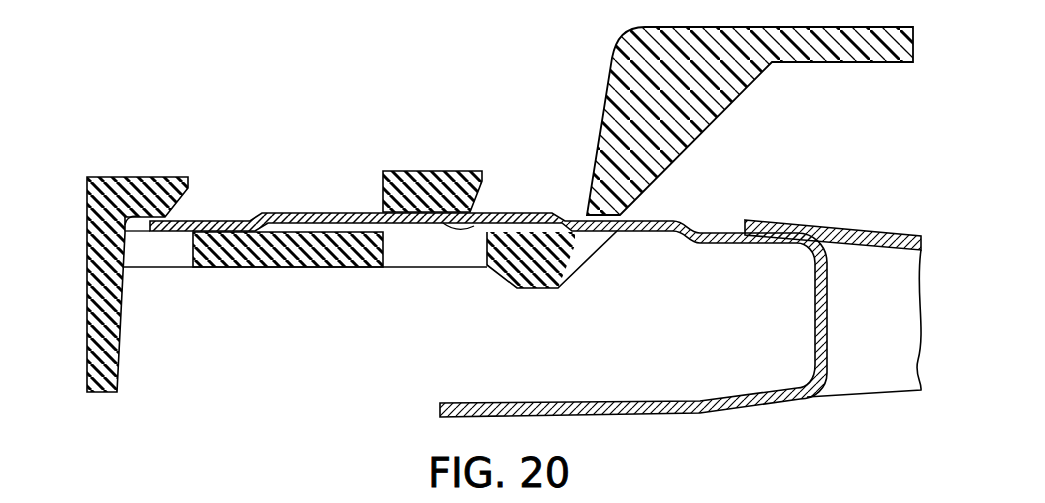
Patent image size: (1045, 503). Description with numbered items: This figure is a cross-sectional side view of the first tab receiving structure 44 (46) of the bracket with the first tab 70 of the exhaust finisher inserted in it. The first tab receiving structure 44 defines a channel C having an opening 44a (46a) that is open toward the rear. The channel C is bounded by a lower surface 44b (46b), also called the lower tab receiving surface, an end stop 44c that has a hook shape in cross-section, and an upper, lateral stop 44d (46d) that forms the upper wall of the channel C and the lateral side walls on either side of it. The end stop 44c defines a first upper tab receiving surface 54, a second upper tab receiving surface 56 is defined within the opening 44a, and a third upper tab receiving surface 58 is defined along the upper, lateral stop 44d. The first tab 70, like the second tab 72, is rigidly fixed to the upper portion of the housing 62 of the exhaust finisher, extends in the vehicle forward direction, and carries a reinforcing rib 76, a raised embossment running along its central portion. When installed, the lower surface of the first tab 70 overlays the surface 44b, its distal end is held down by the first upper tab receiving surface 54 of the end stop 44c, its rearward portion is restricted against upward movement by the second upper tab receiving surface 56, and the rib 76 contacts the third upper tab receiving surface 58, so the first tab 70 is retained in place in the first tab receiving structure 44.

The first tab receiving structure 44 is at (381, 219).
The frame body 46 is at (381, 219).
The opening 44a is at (581, 277).
The first frame body portion 46a is at (543, 263).
The lower surface 44b is at (302, 202).
The second frame body portion 46b is at (330, 236).
The end stop 44c is at (108, 195).
The upper, lateral stop 44d is at (452, 165).
The fourth frame body portion 46d is at (433, 190).
The first upper tab receiving surface 54 is at (118, 227).
The second upper tab receiving surface 56 is at (647, 219).
The third upper tab receiving surface 58 is at (480, 212).
The housing 62 is at (868, 370).
The first tab 70 is at (211, 201).
The second tab 72 is at (207, 223).
The reinforcing rib 76 is at (288, 213).
The channel C is at (140, 227).